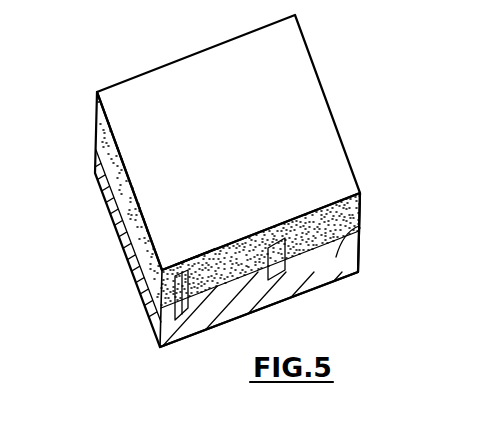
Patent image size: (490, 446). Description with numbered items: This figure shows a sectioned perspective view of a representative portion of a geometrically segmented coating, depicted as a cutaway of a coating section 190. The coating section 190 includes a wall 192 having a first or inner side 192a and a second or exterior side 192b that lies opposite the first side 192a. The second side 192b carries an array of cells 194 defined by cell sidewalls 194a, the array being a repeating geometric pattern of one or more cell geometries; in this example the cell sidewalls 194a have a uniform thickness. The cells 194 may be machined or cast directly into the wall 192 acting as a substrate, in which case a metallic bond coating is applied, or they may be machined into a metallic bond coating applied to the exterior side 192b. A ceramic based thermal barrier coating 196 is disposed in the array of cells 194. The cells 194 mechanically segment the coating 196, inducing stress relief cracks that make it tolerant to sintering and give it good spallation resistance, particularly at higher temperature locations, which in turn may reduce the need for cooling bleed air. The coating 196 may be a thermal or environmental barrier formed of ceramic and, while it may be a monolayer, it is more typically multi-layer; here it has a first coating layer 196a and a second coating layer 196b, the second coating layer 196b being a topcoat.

The coating section 190 is at (94, 352).
The wall 192 is at (184, 352).
The first side 192a is at (340, 278).
The second side 192b is at (335, 224).
The cells 194 is at (222, 262).
The cell sidewalls 194a is at (268, 255).
The thermal barrier coating 196 is at (186, 267).
The first coating layer 196a is at (352, 238).
The second coating layer 196b is at (174, 312).